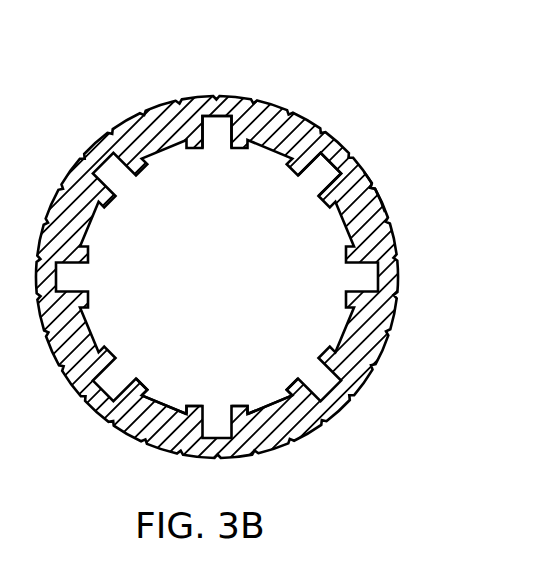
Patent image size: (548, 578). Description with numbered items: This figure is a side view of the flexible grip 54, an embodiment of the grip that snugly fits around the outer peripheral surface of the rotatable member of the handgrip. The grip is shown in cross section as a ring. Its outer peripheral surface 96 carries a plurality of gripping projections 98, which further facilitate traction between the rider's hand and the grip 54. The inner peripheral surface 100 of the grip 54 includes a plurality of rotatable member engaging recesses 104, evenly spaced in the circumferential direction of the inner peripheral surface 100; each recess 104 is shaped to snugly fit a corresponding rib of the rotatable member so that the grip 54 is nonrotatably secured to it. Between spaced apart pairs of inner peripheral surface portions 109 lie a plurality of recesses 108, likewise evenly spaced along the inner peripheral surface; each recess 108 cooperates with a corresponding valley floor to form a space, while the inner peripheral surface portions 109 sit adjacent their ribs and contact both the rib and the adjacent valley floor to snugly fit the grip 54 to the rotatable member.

The flexible grip 54 is at (274, 246).
The outer peripheral surface 96 is at (306, 108).
The gripping projections 98 is at (385, 212).
The inner peripheral surface 100 is at (122, 230).
The rotatable member engaging recess 104 is at (306, 185).
The recess 108 is at (161, 406).
The inner peripheral surface portion 109 is at (142, 385).